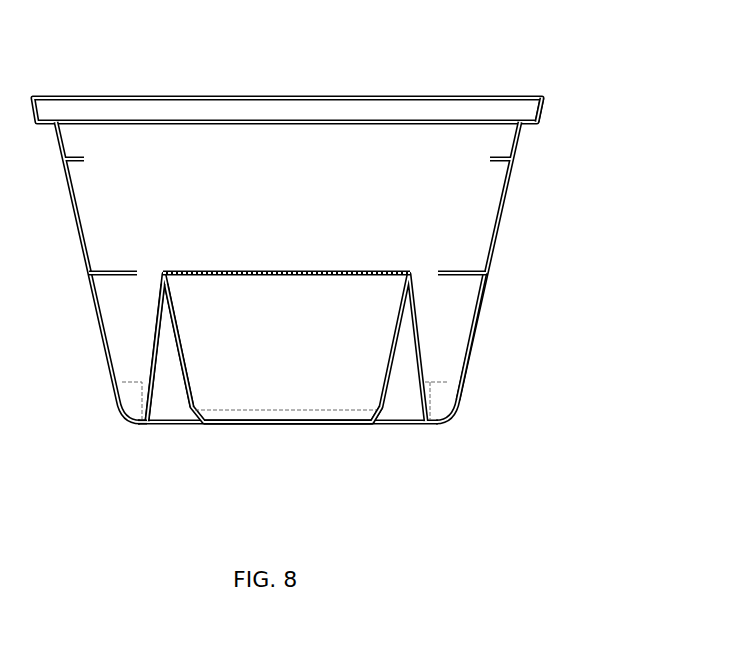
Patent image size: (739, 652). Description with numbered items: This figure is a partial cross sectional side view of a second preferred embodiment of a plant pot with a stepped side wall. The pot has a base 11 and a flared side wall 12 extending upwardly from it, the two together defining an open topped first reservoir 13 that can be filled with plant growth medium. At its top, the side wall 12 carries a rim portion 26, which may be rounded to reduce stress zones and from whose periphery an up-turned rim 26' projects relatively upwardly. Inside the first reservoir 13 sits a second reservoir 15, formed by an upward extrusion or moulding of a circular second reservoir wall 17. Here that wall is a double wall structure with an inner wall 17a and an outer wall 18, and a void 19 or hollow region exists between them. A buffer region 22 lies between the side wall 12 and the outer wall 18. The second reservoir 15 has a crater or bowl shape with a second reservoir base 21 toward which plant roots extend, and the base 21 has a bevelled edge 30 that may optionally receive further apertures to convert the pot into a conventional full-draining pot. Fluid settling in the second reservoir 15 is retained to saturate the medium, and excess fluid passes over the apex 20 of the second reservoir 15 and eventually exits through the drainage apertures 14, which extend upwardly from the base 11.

The first reservoir 13 is at (321, 263).
The up-turned rim 26' is at (573, 110).
The rim portion 26 is at (321, 127).
The side wall 12 is at (308, 272).
The buffer region 22 is at (456, 322).
The base 11 is at (410, 428).
The apex 20 is at (163, 272).
The drainage apertures 14 is at (441, 403).
The second reservoir wall 17 is at (230, 357).
The inner wall 17a is at (177, 330).
The outer wall 18 is at (148, 347).
The void 19 is at (163, 388).
The second reservoir base 21 is at (248, 427).
The second reservoir 15 is at (297, 372).
The bevelled edge 30 is at (378, 427).